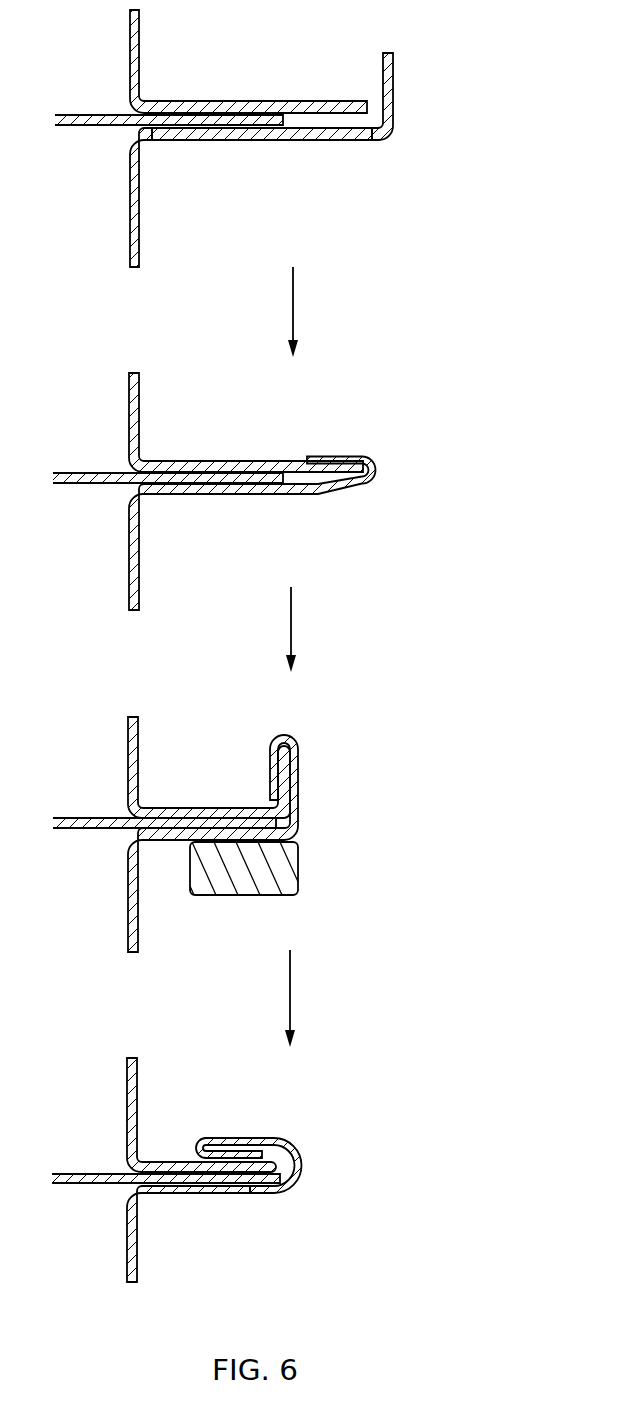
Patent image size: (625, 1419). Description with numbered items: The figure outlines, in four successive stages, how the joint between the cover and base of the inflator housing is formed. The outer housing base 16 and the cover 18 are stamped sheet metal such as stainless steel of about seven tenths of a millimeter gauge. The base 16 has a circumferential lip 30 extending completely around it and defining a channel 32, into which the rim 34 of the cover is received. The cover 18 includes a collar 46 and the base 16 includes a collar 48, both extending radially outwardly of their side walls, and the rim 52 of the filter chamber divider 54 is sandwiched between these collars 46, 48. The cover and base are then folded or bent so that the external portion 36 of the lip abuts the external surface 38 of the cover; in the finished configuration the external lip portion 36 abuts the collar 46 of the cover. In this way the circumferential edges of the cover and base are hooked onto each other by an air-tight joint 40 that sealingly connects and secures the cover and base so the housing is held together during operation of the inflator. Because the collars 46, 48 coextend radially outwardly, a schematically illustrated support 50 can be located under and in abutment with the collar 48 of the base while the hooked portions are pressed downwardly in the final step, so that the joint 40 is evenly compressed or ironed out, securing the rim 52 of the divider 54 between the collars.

The outer housing base 16 is at (136, 248).
The cover 18 is at (136, 32).
The circumferential lip 30 is at (387, 97).
The channel 32 is at (313, 480).
The rim 34 is at (220, 462).
The external portion of the lip 36 is at (270, 755).
The external surface of the cover 38 is at (240, 807).
The air-tight joint 40 is at (253, 1137).
The collar of the cover 46 is at (172, 1165).
The collar of the base 48 is at (175, 1193).
The support 50 is at (273, 870).
The rim of filter chamber divider 52 is at (247, 122).
The filter chamber divider 54 is at (87, 118).